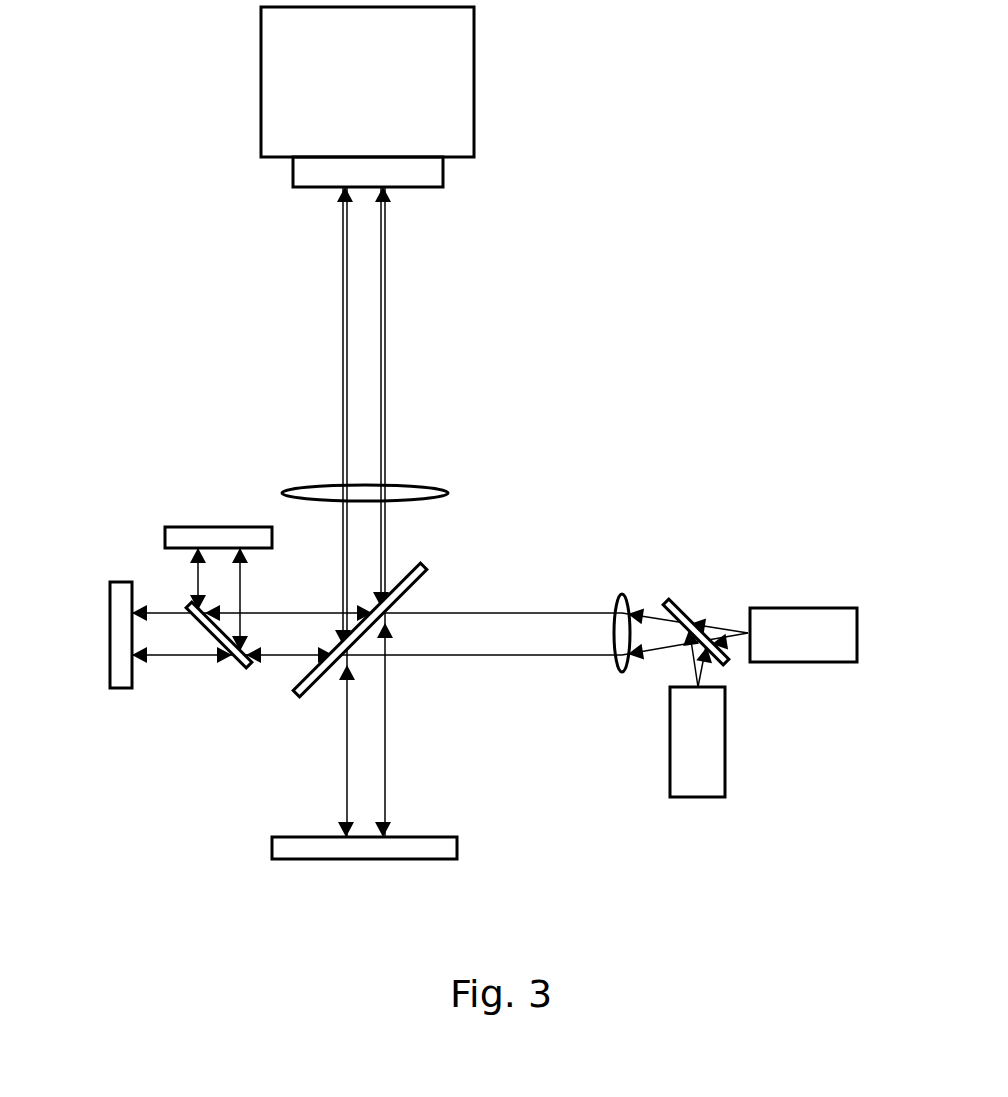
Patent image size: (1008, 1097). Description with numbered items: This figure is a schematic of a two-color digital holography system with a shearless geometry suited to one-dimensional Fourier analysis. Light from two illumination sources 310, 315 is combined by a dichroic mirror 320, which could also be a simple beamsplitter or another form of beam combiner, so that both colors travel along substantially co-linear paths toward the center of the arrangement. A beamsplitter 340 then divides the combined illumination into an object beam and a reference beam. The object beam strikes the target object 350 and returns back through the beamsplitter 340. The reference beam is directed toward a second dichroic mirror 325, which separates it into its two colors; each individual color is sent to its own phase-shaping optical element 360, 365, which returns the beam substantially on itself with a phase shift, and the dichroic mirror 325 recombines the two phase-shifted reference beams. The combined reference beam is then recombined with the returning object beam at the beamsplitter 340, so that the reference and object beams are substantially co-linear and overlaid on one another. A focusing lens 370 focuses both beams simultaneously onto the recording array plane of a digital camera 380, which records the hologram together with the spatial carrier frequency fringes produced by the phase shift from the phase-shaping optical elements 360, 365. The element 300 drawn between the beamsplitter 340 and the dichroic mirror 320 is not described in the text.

The lens 300 is at (621, 672).
The illumination source 310 is at (825, 608).
The illumination source 315 is at (725, 728).
The dichroic mirror 320 is at (675, 598).
The dichroic mirror 325 is at (250, 670).
The beamsplitter 340 is at (300, 700).
The target object 350 is at (410, 859).
The phase-shaping optical element 360 is at (108, 625).
The phase-shaping optical element 365 is at (177, 525).
The focusing lens 370 is at (425, 487).
The digital camera 380 is at (474, 92).